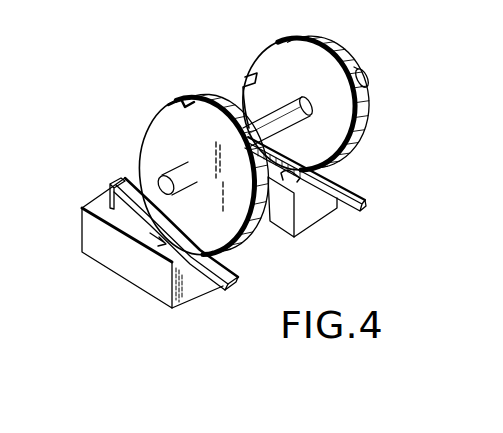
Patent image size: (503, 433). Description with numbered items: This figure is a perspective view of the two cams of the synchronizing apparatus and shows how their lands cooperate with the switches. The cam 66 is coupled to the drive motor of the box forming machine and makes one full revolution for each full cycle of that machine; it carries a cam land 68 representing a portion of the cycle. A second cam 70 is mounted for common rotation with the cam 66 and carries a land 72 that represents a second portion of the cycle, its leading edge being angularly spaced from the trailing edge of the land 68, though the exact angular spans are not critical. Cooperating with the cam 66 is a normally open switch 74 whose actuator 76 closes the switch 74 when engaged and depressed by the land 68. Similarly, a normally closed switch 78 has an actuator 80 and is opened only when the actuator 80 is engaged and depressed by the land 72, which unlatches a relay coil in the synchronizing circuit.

The cam 66 is at (150, 133).
The cam land 68 is at (217, 104).
The second cam 70 is at (319, 78).
The land 72 is at (245, 77).
The normally open switch 74 is at (148, 278).
The actuator 76 is at (222, 290).
The normally closed switch 78 is at (312, 220).
The actuator 80 is at (364, 193).